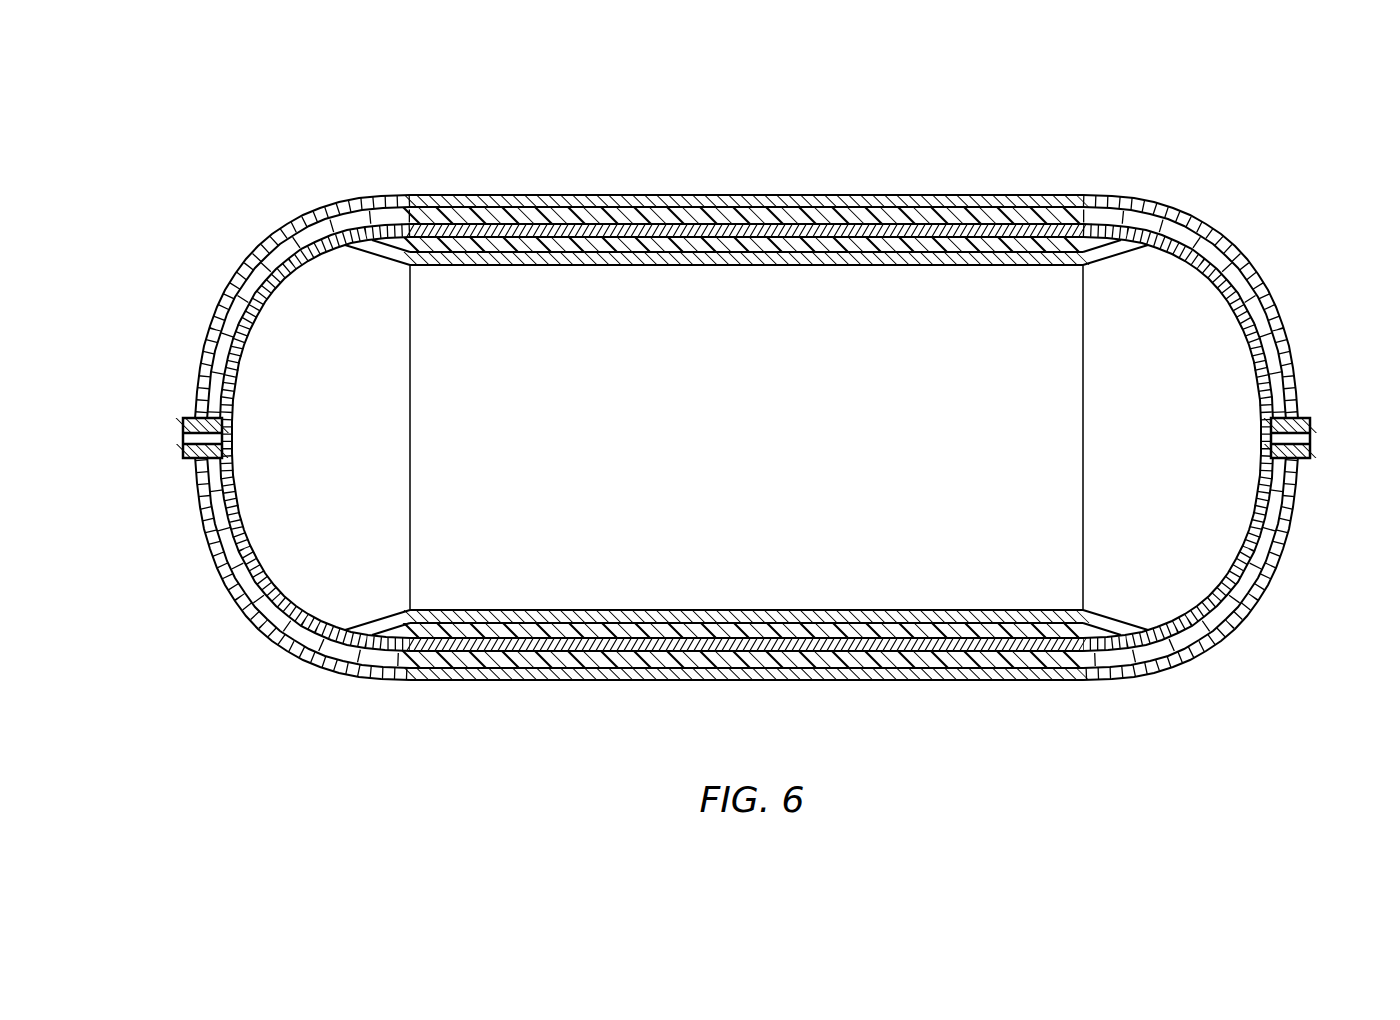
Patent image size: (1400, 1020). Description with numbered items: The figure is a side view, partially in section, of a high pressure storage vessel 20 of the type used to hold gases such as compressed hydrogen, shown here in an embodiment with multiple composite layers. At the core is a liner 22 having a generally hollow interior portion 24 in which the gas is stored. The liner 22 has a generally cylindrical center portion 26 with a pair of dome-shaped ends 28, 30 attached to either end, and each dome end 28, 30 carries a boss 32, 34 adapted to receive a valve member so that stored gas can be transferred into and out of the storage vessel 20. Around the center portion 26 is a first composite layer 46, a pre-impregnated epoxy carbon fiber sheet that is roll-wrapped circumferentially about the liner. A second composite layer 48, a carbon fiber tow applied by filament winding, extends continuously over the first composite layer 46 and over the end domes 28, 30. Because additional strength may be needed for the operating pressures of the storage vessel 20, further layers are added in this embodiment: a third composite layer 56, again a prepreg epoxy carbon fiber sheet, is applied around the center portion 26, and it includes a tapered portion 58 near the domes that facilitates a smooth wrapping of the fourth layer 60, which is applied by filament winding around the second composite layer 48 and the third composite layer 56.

The storage vessel 20 is at (222, 200).
The liner 22 is at (1208, 270).
The hollow interior portion 24 is at (711, 459).
The center portion 26 is at (677, 268).
The dome-shaped end 28 is at (1240, 547).
The dome-shaped end 30 is at (255, 547).
The boss 32 is at (1300, 418).
The boss 34 is at (190, 418).
The first composite layer 46 is at (975, 252).
The second composite layer 48 is at (830, 222).
The third composite layer 56 is at (765, 205).
The tapered portion 58 is at (1120, 203).
The fourth composite layer 60 is at (975, 195).